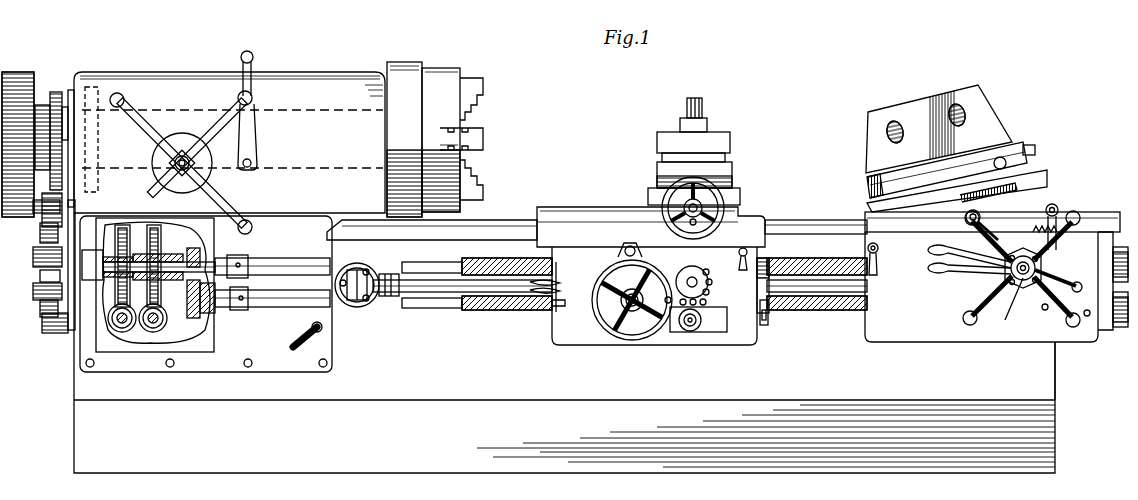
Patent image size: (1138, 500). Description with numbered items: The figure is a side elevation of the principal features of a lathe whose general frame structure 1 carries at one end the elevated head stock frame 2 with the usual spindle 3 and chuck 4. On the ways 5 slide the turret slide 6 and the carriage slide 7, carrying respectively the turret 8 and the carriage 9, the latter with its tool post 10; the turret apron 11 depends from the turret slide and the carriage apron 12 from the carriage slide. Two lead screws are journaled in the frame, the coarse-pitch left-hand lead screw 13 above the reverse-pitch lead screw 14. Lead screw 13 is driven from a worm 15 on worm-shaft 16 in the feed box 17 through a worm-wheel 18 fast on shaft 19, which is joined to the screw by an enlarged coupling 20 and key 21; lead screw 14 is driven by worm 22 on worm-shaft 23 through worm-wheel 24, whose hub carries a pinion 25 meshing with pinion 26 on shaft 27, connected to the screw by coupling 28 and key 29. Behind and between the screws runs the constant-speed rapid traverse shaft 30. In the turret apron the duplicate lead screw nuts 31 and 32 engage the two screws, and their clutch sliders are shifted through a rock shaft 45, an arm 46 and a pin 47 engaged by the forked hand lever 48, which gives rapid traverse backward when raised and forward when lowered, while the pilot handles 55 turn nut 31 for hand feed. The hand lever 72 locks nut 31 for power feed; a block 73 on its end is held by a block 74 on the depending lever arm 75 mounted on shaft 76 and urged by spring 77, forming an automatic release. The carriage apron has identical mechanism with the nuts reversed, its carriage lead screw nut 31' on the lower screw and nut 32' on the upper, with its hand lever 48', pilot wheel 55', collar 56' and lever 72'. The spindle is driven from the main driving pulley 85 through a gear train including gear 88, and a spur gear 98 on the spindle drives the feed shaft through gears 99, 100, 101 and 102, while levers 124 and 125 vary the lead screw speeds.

The general frame structure 1 is at (564, 343).
The head stock frame 2 is at (201, 73).
The spindle 3 is at (317, 109).
The chuck 4 is at (442, 72).
The ways 5 is at (803, 222).
The turret slide 6 is at (938, 215).
The carriage slide 7 is at (748, 218).
The turret 8 is at (978, 98).
The carriage 9 is at (732, 190).
The tool post 10 is at (717, 133).
The turret apron 11 is at (981, 316).
The carriage apron 12 is at (654, 294).
The lead screw 13 is at (468, 260).
The lead screw 14 is at (485, 308).
The worm 15 is at (107, 327).
The worm-shaft 16 is at (123, 332).
The feed box 17 is at (213, 347).
The worm-wheel 18 is at (122, 222).
The shaft 19 is at (170, 260).
The coupling 20 is at (245, 262).
The key 21 is at (240, 272).
The worm 22 is at (155, 332).
The worm-shaft 23 is at (163, 327).
The worm-wheel 24 is at (126, 266).
The pinion 25 is at (192, 247).
The pinion 26 is at (200, 318).
The shaft 27 is at (197, 302).
The coupling 28 is at (253, 292).
The key 29 is at (247, 307).
The rapid traverse shaft 30 is at (430, 283).
The lead screw nut 31 is at (1108, 257).
The lead screw nut 32 is at (1111, 301).
The rock shaft 45 is at (1064, 291).
The arm 46 is at (1066, 322).
The pin 47 is at (1035, 283).
The hand lever 48 is at (969, 282).
The pilot handles 55 is at (971, 303).
The hand lever 72 is at (958, 239).
The block 73 is at (1060, 260).
The block 74 is at (1080, 218).
The lever arm 75 is at (1066, 226).
The shaft 76 is at (1046, 220).
The spring 77 is at (1038, 221).
The main driving pulley 85 is at (28, 73).
The gear 88 is at (98, 87).
The spur gear 98 is at (57, 93).
The gear 99 is at (62, 192).
The gear 100 is at (37, 216).
The gear 101 is at (38, 240).
The feed shaft gear 102 is at (45, 281).
The lever 124 is at (292, 343).
The lever 125 is at (333, 331).
The carriage lead screw nut 31' is at (782, 322).
The carriage lead screw nut 32' is at (782, 277).
The hand lever 48' is at (540, 323).
The carriage pilot wheel 55' is at (632, 314).
The collar 56' is at (688, 289).
The hand lever 72' is at (570, 282).